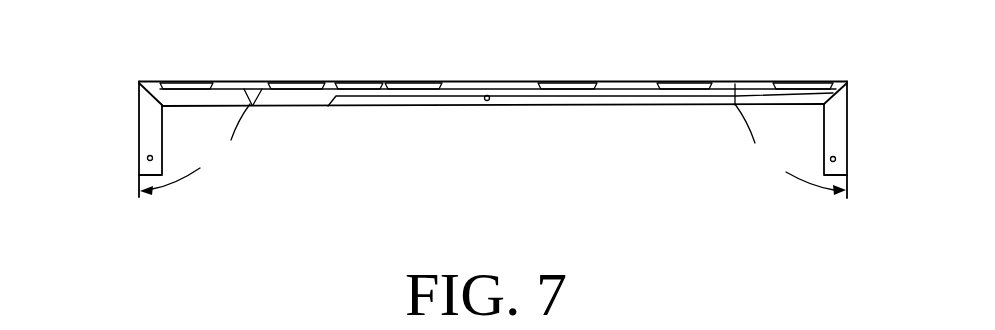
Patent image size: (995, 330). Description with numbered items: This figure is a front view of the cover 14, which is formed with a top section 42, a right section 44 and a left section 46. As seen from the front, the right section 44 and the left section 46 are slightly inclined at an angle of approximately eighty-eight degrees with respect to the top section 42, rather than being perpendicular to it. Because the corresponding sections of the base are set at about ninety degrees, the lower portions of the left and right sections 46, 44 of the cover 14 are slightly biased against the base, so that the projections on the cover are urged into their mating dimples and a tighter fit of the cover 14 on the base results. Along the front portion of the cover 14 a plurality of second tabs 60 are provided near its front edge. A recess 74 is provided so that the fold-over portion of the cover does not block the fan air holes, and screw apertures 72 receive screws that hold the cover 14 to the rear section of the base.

The cover 14 is at (112, 76).
The top section 42 is at (630, 81).
The right section 44 is at (838, 121).
The left section 46 is at (139, 105).
The second tabs 60 is at (405, 81).
The screw apertures 72 is at (146, 156).
The recess 74 is at (332, 106).